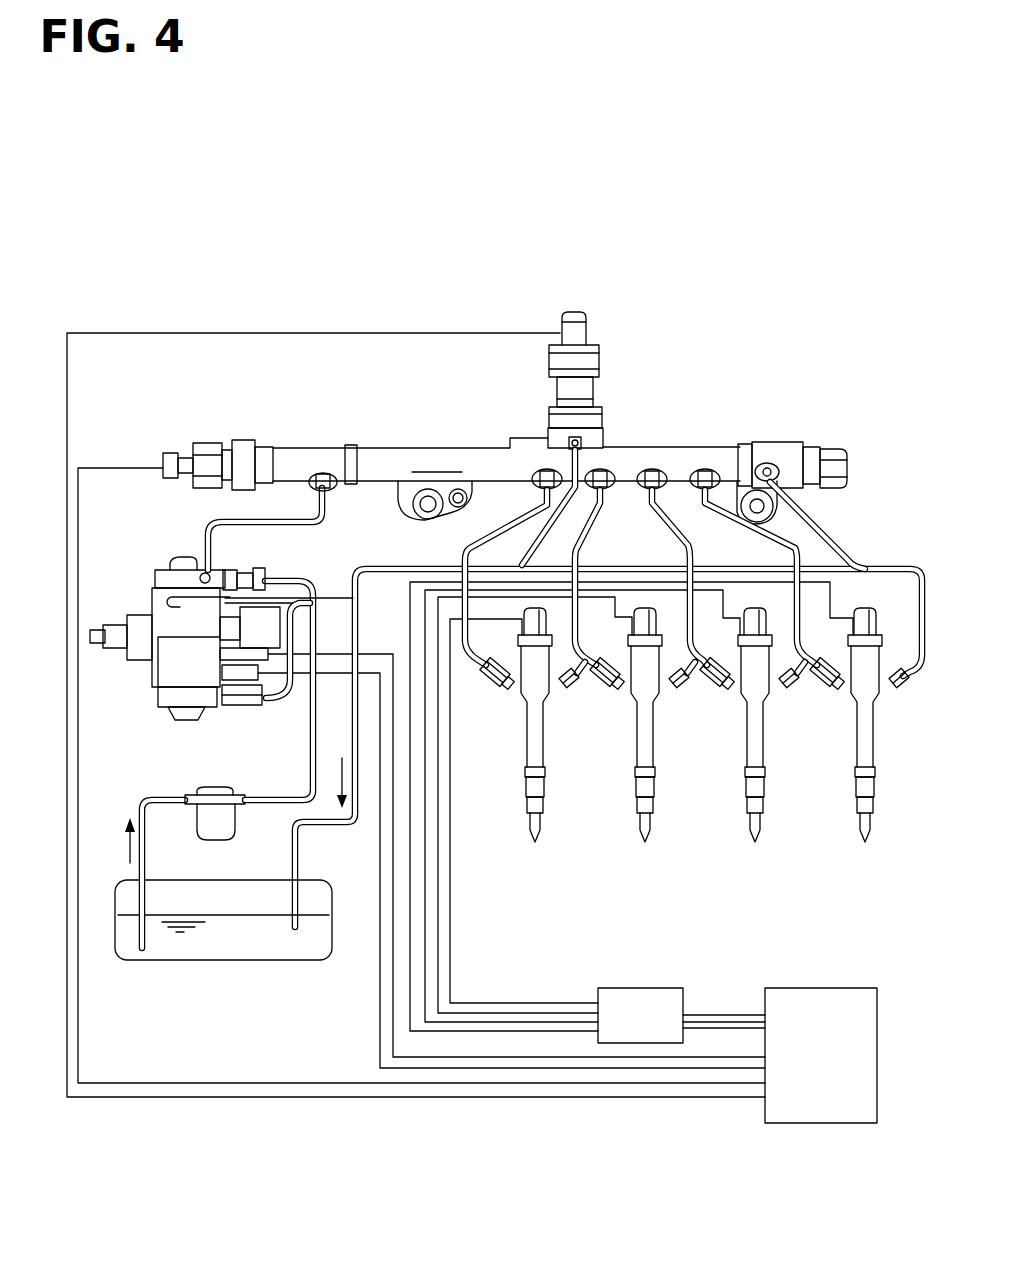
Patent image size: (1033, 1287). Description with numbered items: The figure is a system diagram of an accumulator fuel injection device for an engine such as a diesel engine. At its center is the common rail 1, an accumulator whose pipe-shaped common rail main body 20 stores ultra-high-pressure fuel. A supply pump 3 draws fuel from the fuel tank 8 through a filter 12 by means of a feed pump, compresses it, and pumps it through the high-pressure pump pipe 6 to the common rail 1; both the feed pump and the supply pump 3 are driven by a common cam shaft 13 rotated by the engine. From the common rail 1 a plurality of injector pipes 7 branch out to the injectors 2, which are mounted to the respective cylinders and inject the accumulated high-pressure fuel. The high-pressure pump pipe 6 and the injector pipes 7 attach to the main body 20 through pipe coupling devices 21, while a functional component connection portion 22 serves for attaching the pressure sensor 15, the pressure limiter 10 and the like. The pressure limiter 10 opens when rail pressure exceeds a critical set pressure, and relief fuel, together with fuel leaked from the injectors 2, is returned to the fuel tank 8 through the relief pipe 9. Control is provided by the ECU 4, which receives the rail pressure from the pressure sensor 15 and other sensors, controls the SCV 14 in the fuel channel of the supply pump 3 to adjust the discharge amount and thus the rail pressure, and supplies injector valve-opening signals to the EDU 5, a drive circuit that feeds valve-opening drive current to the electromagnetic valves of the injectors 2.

The common rail 1 is at (515, 425).
The injectors 2 is at (543, 738).
The supply pump 3 is at (150, 572).
The ECU 4 is at (822, 988).
The EDU 5 is at (645, 988).
The high-pressure pump pipe 6 is at (222, 520).
The injector pipes 7 is at (905, 548).
The fuel tank 8 is at (178, 880).
The relief pipe 9 is at (358, 620).
The pressure limiter 10 is at (830, 450).
The filter 12 is at (240, 820).
The cam shaft 13 is at (113, 648).
The SCV 14 is at (264, 706).
The pressure sensor 15 is at (172, 452).
The common rail main body 20 is at (445, 452).
The pipe coupling devices 21 is at (760, 466).
The functional component connection portion 22 is at (242, 440).